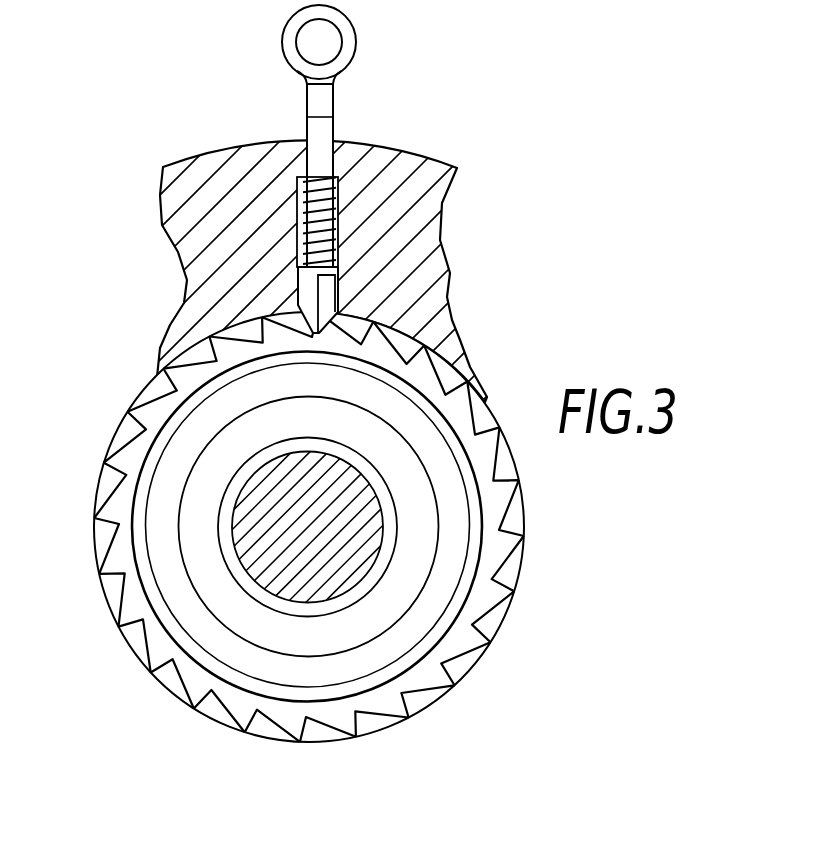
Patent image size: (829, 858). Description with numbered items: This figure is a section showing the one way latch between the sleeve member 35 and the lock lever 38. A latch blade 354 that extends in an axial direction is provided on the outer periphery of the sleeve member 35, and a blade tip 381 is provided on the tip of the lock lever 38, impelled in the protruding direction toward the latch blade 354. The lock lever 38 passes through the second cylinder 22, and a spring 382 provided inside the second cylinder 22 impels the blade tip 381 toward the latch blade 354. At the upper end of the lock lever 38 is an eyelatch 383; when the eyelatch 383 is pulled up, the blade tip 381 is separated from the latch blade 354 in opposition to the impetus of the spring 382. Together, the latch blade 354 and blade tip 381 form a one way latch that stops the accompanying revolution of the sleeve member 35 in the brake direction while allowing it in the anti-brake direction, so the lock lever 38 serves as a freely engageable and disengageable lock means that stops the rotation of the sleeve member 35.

The second cylinder 22 is at (175, 165).
The sleeve member 35 is at (297, 508).
The latch blade 354 is at (337, 330).
The lock lever 38 is at (319, 169).
The blade tip 381 is at (305, 312).
The spring 382 is at (329, 210).
The eyelatch 383 is at (337, 40).